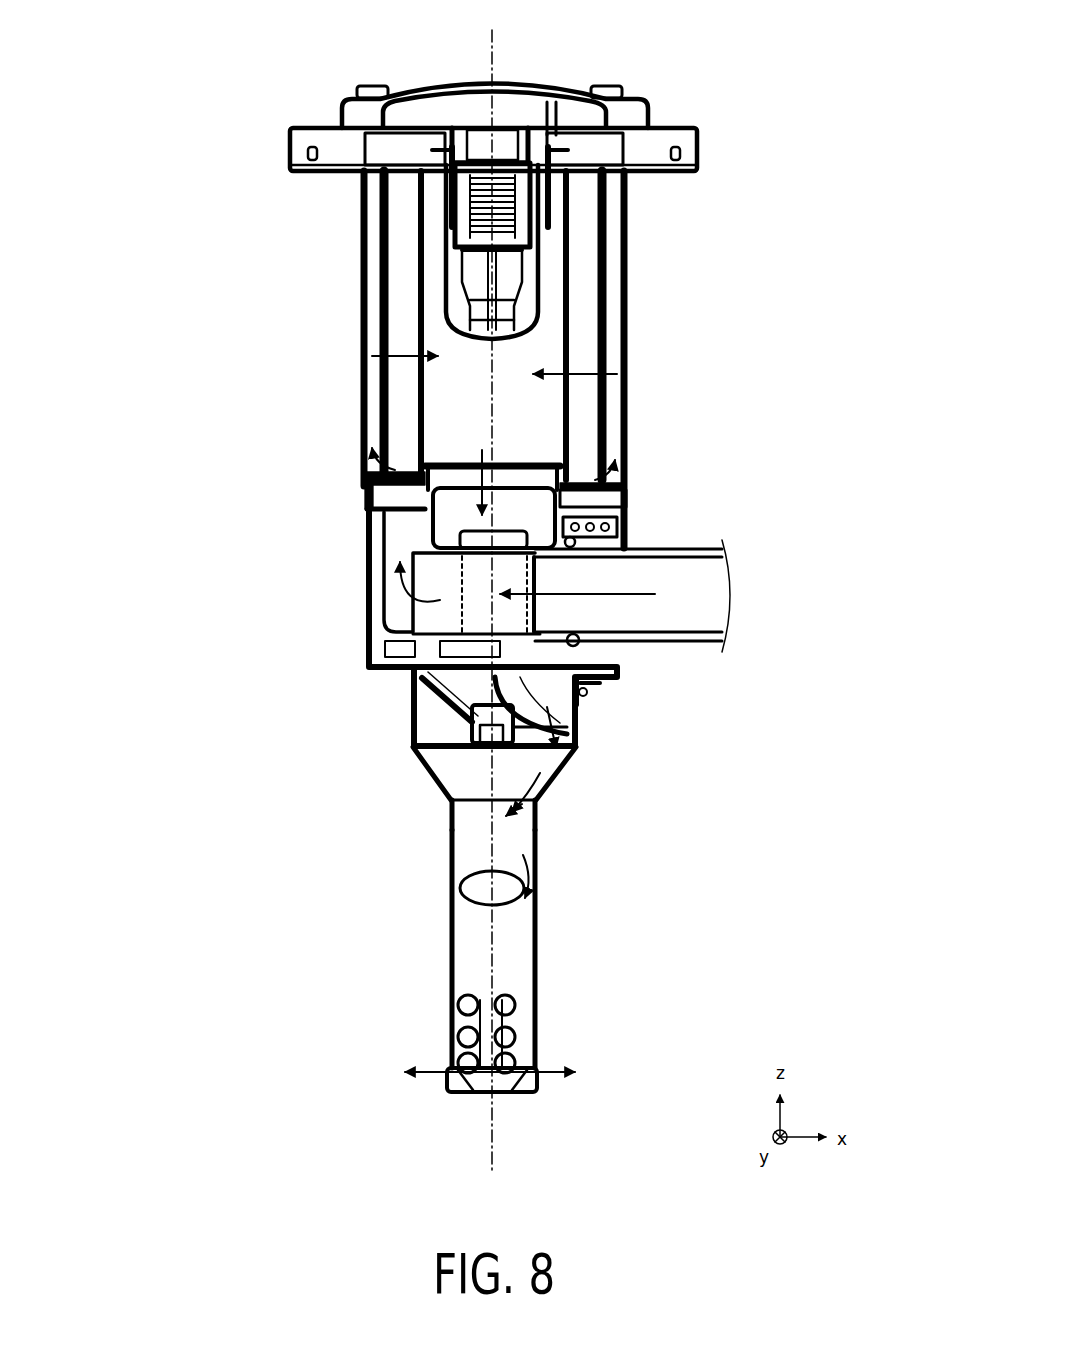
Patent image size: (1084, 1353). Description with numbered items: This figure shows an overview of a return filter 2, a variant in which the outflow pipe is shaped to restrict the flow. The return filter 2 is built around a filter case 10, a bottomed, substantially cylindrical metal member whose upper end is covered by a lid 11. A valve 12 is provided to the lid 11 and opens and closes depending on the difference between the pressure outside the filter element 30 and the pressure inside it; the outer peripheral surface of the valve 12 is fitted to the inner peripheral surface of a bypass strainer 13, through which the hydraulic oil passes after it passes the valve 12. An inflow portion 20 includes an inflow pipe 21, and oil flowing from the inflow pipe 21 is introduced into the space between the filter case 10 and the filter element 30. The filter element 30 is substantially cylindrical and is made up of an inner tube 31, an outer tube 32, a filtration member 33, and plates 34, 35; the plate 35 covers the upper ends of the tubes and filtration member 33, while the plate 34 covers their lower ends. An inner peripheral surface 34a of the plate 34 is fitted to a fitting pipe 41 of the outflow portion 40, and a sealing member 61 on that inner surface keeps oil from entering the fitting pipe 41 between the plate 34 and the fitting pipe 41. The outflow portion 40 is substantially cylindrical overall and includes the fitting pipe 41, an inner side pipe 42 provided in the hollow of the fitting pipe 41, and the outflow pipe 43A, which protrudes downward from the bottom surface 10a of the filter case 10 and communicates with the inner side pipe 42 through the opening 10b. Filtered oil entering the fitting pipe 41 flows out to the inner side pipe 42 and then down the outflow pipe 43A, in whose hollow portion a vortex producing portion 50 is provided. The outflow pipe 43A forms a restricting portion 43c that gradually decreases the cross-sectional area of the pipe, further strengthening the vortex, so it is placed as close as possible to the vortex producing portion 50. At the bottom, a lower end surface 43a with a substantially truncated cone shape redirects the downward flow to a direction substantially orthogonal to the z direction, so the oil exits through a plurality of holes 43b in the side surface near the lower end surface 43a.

The return filter 2 is at (806, 52).
The lid 11 is at (628, 120).
The valve 12 is at (457, 153).
The bypass strainer 13 is at (447, 223).
The filter element 30 is at (697, 407).
The plate 35 is at (556, 196).
The inner tube 31 is at (568, 261).
The filtration member 33 is at (588, 302).
The outer tube 32 is at (607, 331).
The inner peripheral surface 34a is at (545, 480).
The plate 34 is at (618, 470).
The sealing member 61 is at (425, 482).
The filter case 10 is at (364, 500).
The inflow portion 20 is at (703, 540).
The inflow pipe 21 is at (645, 572).
The vortex producing portion 50 is at (590, 628).
The bottom surface 10a is at (600, 675).
The opening 10b is at (577, 688).
The outflow portion 40 is at (303, 802).
The fitting pipe 41 is at (412, 668).
The inner side pipe 42 is at (458, 700).
The restricting portion 43c is at (452, 778).
The outflow pipe 43A is at (452, 913).
The holes 43b is at (508, 1003).
The lower end surface 43a is at (500, 1093).